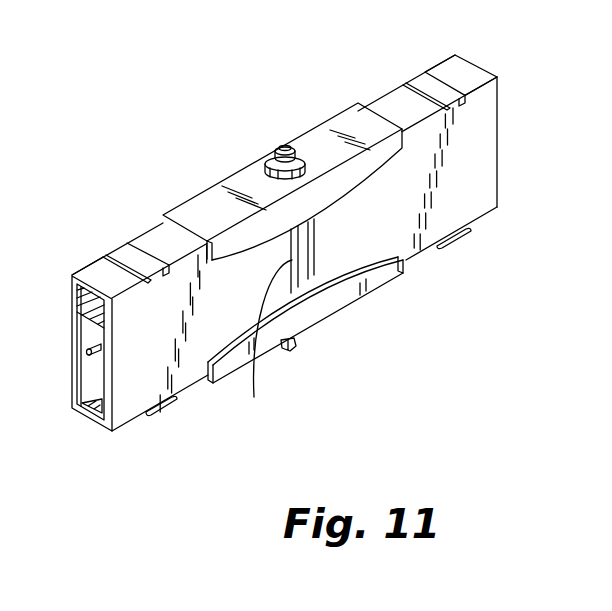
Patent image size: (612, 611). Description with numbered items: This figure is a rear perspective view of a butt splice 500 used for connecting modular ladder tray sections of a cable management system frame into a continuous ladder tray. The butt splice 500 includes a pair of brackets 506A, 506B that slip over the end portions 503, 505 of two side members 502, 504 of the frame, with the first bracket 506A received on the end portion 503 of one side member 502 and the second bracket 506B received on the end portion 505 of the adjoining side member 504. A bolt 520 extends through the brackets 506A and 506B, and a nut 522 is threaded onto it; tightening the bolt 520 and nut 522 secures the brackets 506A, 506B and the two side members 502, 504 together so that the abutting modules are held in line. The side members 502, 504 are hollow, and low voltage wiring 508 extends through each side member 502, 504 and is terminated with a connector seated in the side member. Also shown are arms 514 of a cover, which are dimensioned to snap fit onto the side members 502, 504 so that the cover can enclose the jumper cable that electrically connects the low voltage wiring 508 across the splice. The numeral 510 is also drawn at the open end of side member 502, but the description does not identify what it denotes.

The butt splice 500 is at (291, 70).
The side member 502 is at (97, 276).
The side member 504 is at (454, 72).
The bracket 506A is at (318, 245).
The bracket 506B is at (337, 136).
The arm 514 is at (130, 250).
The nut 522 is at (262, 160).
The low voltage wiring 508 is at (88, 352).
The inner cavity 510 is at (93, 323).
The end portion 503 is at (256, 394).
The end portion 505 is at (333, 302).
The bolt 520 is at (297, 348).